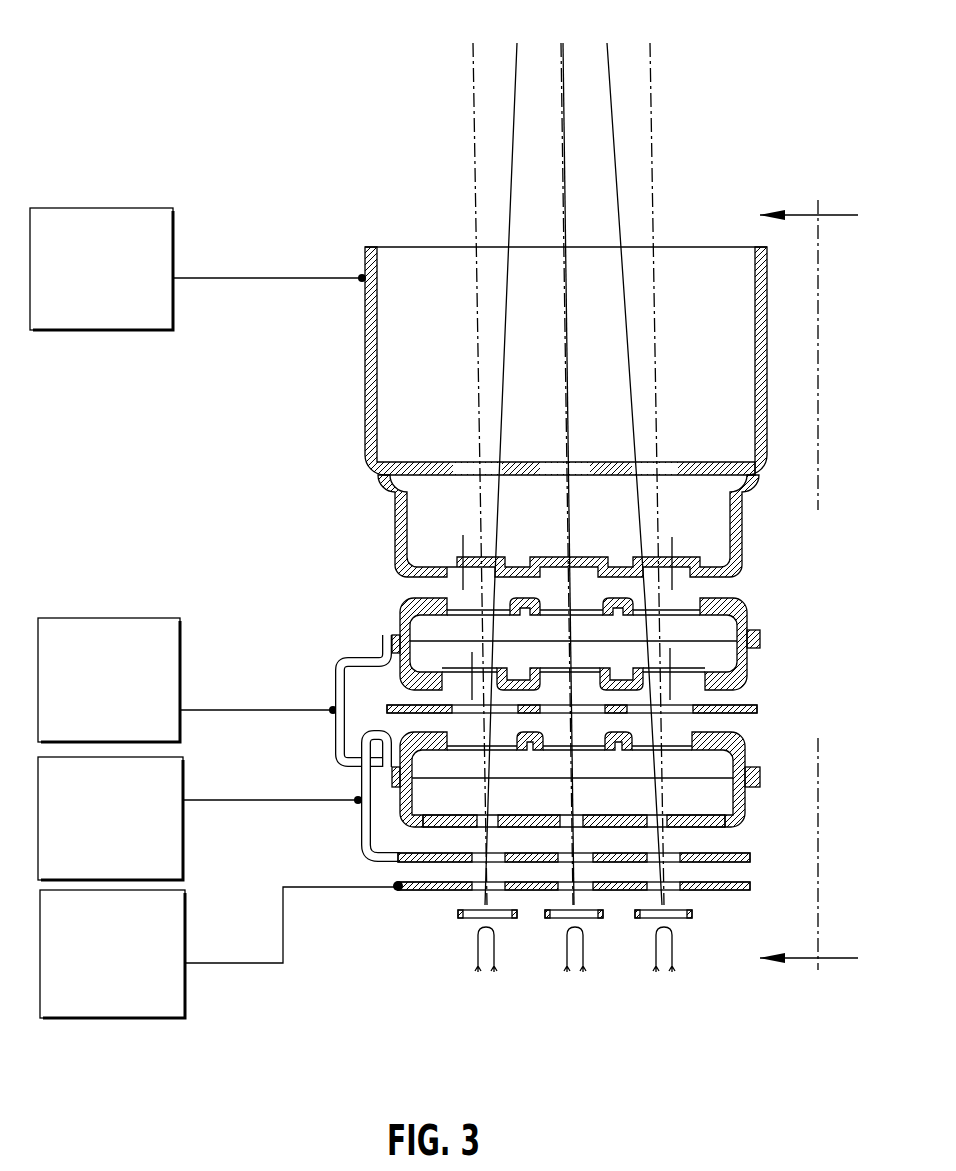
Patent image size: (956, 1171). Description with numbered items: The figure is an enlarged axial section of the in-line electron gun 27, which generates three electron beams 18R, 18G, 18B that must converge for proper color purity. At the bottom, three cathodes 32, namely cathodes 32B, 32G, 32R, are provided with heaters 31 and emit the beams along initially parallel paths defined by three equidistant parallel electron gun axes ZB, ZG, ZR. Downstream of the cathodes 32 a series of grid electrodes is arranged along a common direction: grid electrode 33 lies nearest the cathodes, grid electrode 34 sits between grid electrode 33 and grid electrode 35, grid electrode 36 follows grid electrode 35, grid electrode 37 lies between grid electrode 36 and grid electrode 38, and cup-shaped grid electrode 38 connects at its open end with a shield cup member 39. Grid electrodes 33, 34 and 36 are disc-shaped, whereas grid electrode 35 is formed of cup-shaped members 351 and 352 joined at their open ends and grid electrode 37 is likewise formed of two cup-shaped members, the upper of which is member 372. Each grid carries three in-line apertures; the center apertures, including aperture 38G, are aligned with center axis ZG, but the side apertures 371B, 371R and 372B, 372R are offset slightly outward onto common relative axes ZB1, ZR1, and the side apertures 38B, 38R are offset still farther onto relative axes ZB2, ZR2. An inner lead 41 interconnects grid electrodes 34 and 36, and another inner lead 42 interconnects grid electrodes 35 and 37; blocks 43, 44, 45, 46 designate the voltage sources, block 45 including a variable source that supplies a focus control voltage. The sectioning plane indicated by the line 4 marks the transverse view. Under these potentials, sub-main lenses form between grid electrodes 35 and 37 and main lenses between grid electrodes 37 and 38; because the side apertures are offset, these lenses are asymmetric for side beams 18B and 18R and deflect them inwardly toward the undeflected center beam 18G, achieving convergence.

The blue electron beam 18B is at (515, 62).
The green electron beam 18G is at (563, 62).
The red electron beam 18R is at (608, 62).
The electron gun 27 is at (432, 247).
The shield cup member 39 is at (767, 327).
The grid electrode 38 is at (556, 545).
The side aperture of grid electrode 38 38B is at (404, 586).
The center aperture of grid electrode 38 38G is at (560, 567).
The side aperture of grid electrode 38 38R is at (770, 512).
The grid electrode 37 is at (612, 642).
The second cup-shaped member of grid electrode 37 372 is at (745, 606).
The side aperture of grid electrode member 372 372B is at (492, 603).
The side aperture of grid electrode member 372 372R is at (656, 603).
The side aperture of grid electrode member 371 371B is at (489, 676).
The side aperture of grid electrode member 371 371R is at (655, 676).
The grid electrode 36 is at (750, 707).
The grid electrode 35 is at (633, 767).
The second cup-shaped member of grid electrode 35 352 is at (748, 735).
The first cup-shaped member of grid electrode 35 351 is at (744, 812).
The grid electrode 34 is at (750, 857).
The grid electrode 33 is at (750, 884).
The cathodes 32 is at (557, 950).
The blue cathode 32B is at (473, 918).
The green cathode 32G is at (560, 918).
The red cathode 32R is at (682, 914).
The heaters 31 is at (498, 960).
The inner lead 41 is at (361, 838).
The inner lead 42 is at (337, 667).
The voltage source 43 is at (118, 1018).
The voltage source 44 is at (175, 791).
The variable focus voltage source 45 is at (97, 618).
The voltage source 46 is at (97, 208).
The section line 4- 4 is at (809, 588).
The side electron gun axis ZB is at (473, 88).
The center electron gun axis ZG is at (563, 163).
The side electron gun axis ZR is at (652, 72).
The relative axis of apertures 371B and 372B ZB1 is at (472, 683).
The relative axis of aperture 38B ZB2 is at (463, 535).
The relative axis of apertures 371R and 372R ZR1 is at (670, 652).
The relative axis of aperture 38R ZR2 is at (672, 542).